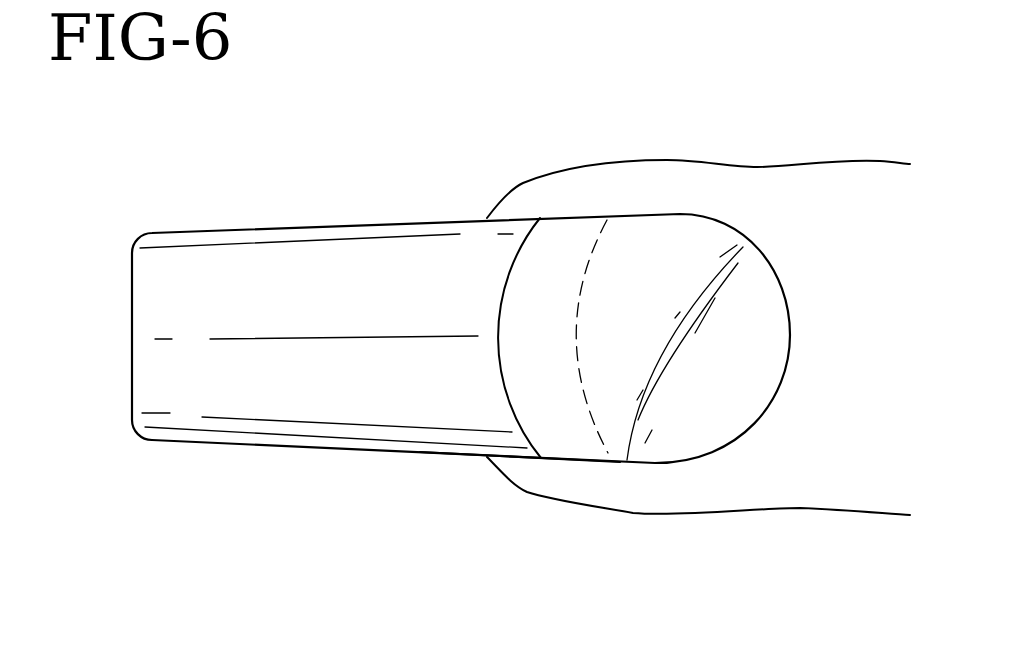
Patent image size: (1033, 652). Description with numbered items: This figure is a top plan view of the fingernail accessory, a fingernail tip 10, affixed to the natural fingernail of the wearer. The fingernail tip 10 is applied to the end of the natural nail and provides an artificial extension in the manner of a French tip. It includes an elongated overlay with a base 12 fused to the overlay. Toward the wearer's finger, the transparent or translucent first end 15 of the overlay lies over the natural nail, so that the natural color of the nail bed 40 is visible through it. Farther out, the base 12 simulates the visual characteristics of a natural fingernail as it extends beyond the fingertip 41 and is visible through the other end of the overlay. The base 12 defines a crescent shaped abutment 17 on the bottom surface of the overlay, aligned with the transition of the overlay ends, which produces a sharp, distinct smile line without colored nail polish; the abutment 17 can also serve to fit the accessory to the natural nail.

The fingernail tip 10 is at (326, 168).
The base 12 is at (202, 252).
The first end 15 is at (538, 262).
The abutment 17 is at (498, 378).
The nail bed 40 is at (620, 265).
The fingertip 41 is at (635, 505).